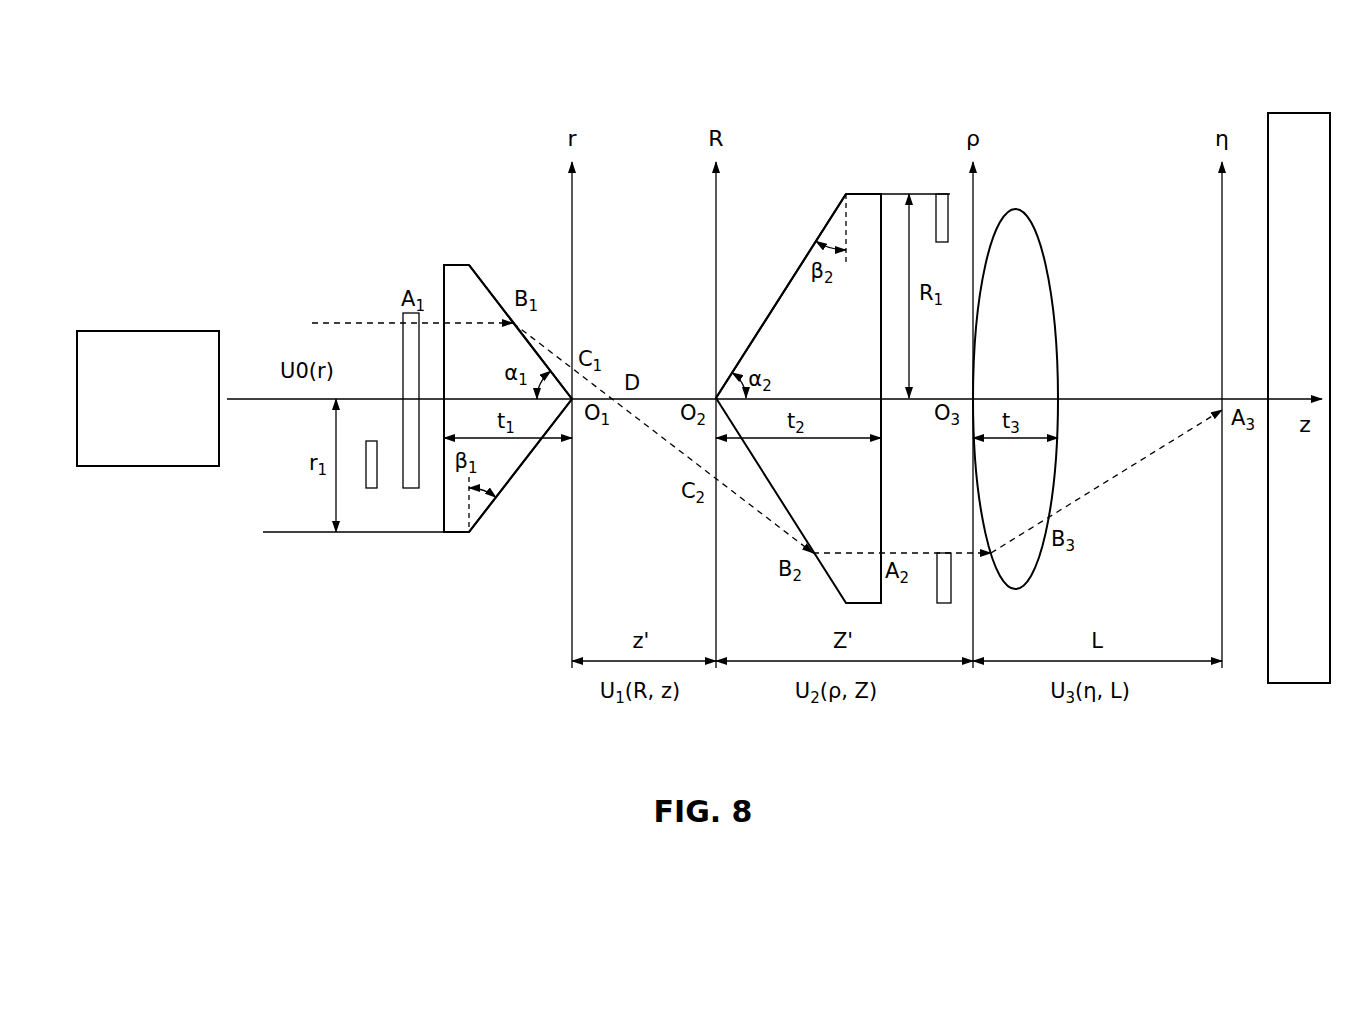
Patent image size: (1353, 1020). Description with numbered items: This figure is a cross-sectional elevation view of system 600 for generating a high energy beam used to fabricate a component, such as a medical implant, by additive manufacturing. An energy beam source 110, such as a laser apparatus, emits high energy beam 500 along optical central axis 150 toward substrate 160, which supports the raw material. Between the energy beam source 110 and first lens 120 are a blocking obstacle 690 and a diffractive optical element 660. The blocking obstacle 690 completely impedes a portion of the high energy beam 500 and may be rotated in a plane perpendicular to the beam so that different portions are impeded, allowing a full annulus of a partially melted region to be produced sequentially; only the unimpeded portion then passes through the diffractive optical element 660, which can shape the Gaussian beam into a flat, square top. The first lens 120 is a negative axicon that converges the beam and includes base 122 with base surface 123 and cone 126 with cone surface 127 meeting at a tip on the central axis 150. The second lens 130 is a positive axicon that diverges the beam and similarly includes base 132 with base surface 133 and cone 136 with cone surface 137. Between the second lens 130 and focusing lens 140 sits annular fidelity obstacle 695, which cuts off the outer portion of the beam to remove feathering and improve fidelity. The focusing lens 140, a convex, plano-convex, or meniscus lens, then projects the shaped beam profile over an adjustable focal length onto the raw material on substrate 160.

The system 600 is at (170, 86).
The energy beam source 110 is at (148, 398).
The optical central axis 150 is at (274, 401).
The high energy beam 500 is at (326, 321).
The blocking obstacle 690 is at (371, 490).
The diffractive optical element 660 is at (411, 490).
The first lens 120 is at (462, 543).
The base 122 is at (455, 272).
The base surface 123 is at (444, 510).
The cone surface 127 is at (486, 283).
The cone 126 is at (503, 475).
The second lens 130 is at (798, 398).
The cone surface 137 is at (803, 262).
The cone 136 is at (778, 314).
The base 132 is at (863, 481).
The base surface 133 is at (881, 540).
The fidelity obstacle 695 is at (944, 590).
The focusing lens 140 is at (1015, 399).
The substrate 160 is at (1299, 398).